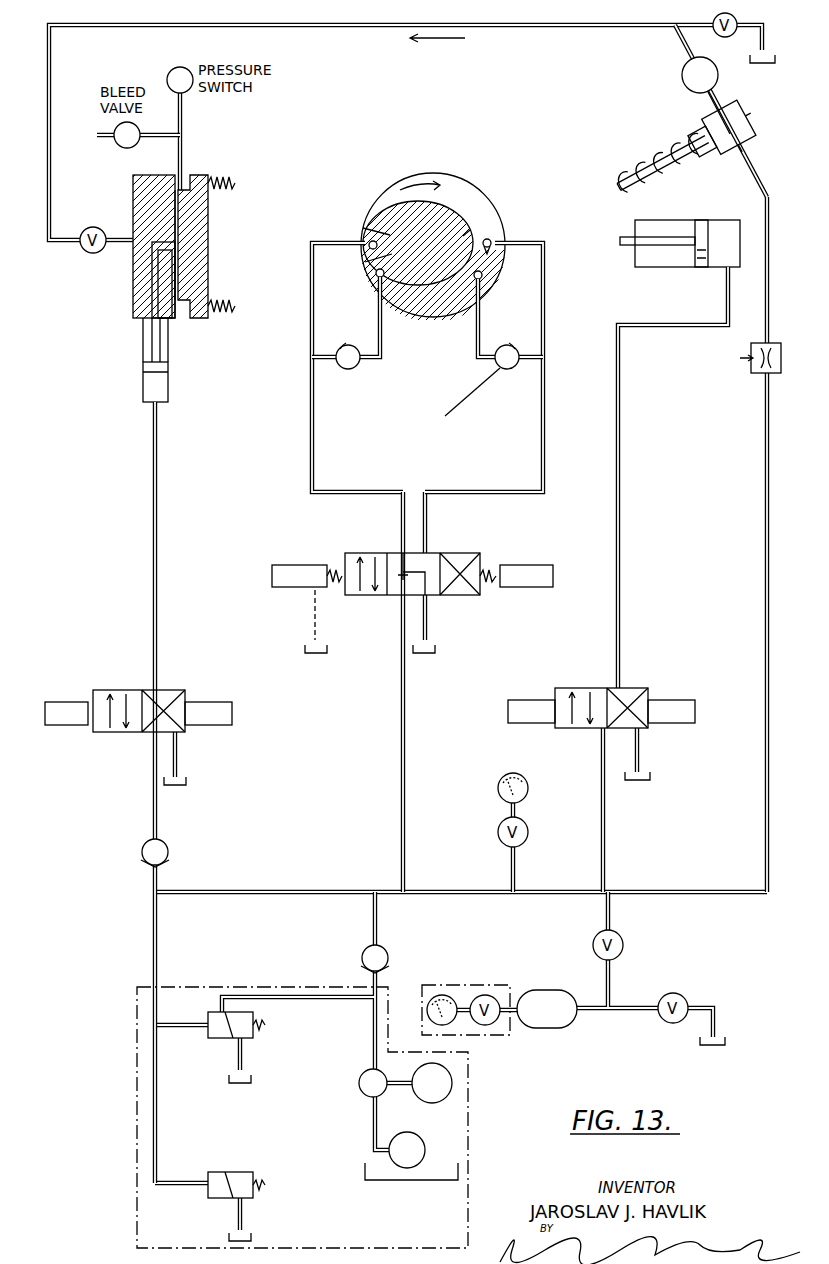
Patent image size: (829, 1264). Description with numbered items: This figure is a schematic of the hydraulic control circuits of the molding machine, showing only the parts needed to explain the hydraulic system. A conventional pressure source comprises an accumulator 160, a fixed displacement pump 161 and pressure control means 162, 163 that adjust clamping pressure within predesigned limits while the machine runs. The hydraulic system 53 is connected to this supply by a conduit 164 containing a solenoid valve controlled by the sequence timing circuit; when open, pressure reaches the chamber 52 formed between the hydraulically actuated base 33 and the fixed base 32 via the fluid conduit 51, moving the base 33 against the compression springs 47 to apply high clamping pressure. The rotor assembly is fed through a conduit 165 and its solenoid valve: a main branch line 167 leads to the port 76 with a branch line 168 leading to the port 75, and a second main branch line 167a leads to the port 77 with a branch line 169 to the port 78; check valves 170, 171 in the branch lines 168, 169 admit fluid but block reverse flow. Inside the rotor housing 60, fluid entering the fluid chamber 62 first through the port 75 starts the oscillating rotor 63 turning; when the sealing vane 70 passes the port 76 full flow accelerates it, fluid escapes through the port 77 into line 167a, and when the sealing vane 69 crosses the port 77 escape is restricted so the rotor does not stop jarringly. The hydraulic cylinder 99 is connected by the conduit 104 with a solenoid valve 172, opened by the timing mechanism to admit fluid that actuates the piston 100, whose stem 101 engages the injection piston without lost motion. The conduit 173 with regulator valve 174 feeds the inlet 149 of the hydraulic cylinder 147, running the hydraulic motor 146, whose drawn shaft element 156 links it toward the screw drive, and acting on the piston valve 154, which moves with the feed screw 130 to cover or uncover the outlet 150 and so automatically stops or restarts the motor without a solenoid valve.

The fixed base 32 is at (133, 275).
The hydraulically actuated base 33 is at (200, 244).
The compression spring 47 is at (228, 186).
The fluid conduit 51 is at (158, 296).
The chamber 52 is at (182, 214).
The hydraulic system 53 is at (143, 353).
The rotor housing 60 is at (490, 208).
The fluid chamber 62 is at (456, 190).
The oscillating rotor 63 is at (470, 230).
The sealing vane 69 is at (372, 240).
The sealing vane 70 is at (372, 254).
The port 75 is at (378, 278).
The port 76 is at (368, 240).
The port 77 is at (497, 241).
The port 78 is at (484, 273).
The hydraulic cylinder 99 is at (685, 220).
The piston 100 is at (699, 267).
The stem 101 is at (622, 247).
The conduit 104 is at (620, 552).
The feed screw 130 is at (645, 131).
The hydraulic motor 146 is at (682, 76).
The hydraulic cylinder 147 is at (732, 172).
The inlet 149 is at (774, 127).
The outlet 150 is at (748, 106).
The piston valve 154 is at (681, 117).
The motor shaft 156 is at (718, 102).
The accumulator 160 is at (556, 1028).
The fixed displacement pump 161 is at (362, 1078).
The pressure control means 162 is at (218, 1040).
The pressure control means 163 is at (229, 1172).
The conduit 164 is at (150, 532).
The conduit 165 is at (405, 746).
The main branch line 167 is at (315, 400).
The second main branch line 167a is at (541, 385).
The branch line 168 is at (385, 344).
The branch line 169 is at (478, 346).
The check valve 170 is at (356, 368).
The check valve 171 is at (460, 406).
The solenoid valve 172 is at (620, 688).
The conduit 173 is at (762, 474).
The regulator valve 174 is at (755, 373).